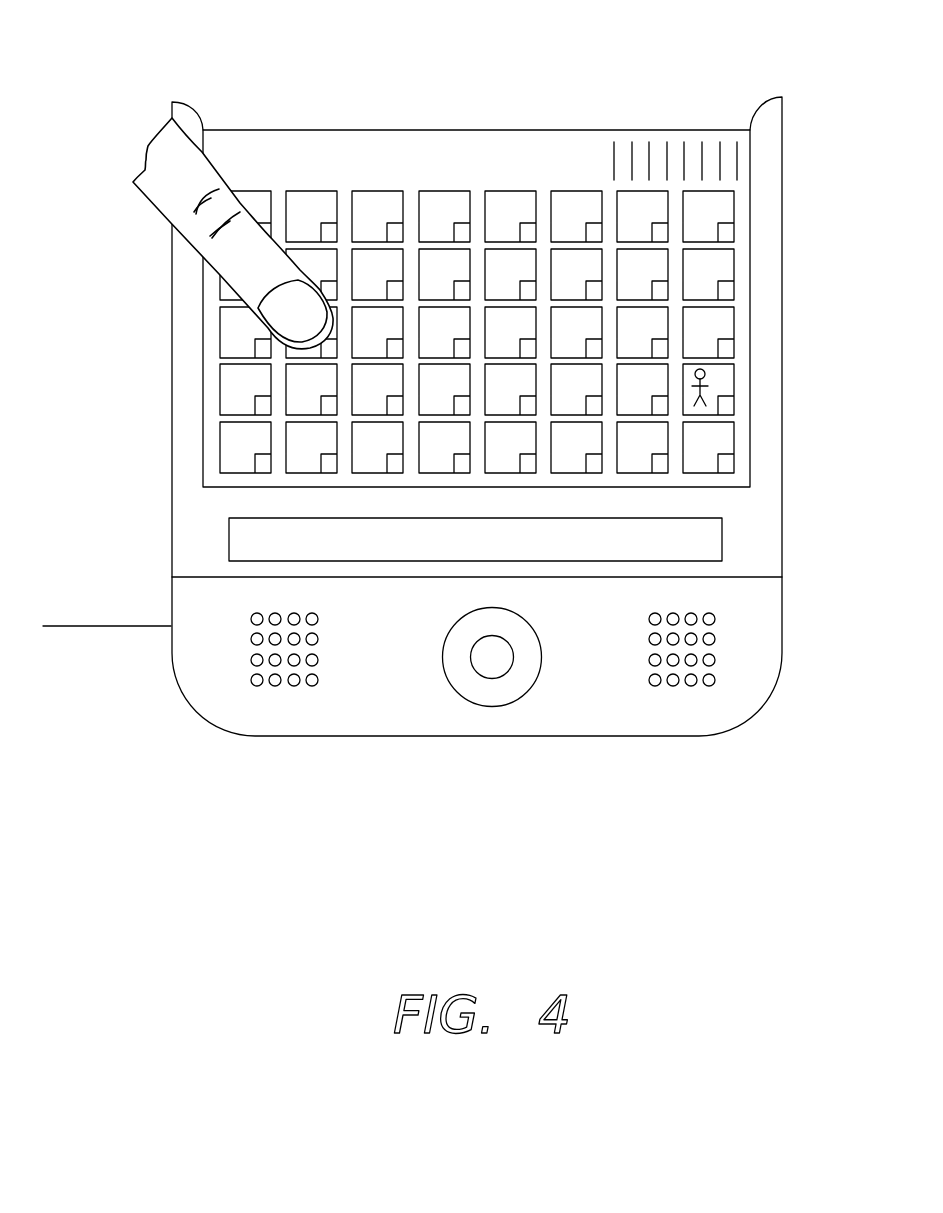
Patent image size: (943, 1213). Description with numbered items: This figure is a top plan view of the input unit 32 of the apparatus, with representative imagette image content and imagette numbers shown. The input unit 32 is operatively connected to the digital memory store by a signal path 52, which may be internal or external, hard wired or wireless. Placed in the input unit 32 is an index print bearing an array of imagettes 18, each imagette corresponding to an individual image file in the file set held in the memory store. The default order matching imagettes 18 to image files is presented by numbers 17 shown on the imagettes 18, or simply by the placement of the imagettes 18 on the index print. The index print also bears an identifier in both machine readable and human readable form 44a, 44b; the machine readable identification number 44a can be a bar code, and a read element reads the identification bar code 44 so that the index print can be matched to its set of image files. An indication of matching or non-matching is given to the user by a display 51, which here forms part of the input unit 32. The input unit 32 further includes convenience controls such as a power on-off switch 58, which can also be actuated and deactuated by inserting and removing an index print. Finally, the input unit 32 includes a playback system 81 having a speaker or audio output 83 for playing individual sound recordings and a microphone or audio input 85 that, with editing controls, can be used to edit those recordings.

The numbers 17 is at (392, 220).
The imagettes 18 is at (717, 440).
The input unit 32 is at (162, 356).
The identification bar code 44 is at (585, 96).
The machine readable identification number 44a is at (648, 145).
The human readable identification number 44b is at (462, 168).
The display 51 is at (223, 533).
The signal path 52 is at (87, 627).
The power on-off switch 58 is at (483, 702).
The playback system 81 is at (482, 719).
The speaker or audio output 83 is at (257, 682).
The microphone or audio input 85 is at (693, 682).